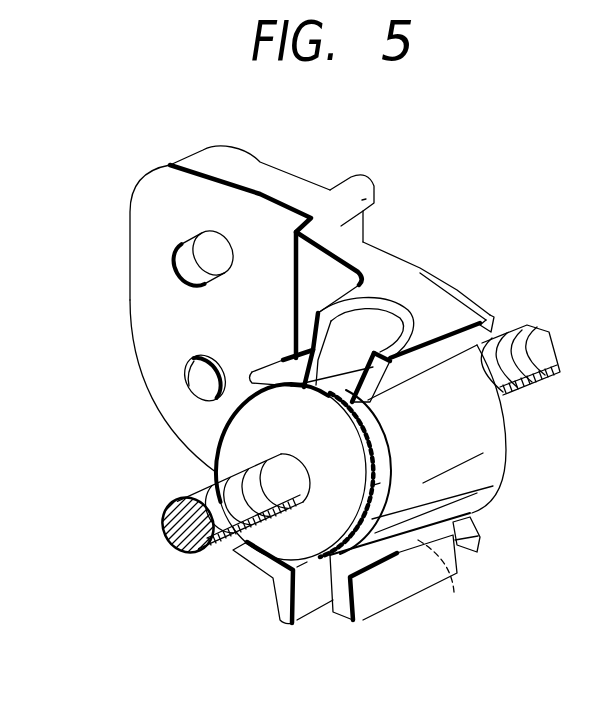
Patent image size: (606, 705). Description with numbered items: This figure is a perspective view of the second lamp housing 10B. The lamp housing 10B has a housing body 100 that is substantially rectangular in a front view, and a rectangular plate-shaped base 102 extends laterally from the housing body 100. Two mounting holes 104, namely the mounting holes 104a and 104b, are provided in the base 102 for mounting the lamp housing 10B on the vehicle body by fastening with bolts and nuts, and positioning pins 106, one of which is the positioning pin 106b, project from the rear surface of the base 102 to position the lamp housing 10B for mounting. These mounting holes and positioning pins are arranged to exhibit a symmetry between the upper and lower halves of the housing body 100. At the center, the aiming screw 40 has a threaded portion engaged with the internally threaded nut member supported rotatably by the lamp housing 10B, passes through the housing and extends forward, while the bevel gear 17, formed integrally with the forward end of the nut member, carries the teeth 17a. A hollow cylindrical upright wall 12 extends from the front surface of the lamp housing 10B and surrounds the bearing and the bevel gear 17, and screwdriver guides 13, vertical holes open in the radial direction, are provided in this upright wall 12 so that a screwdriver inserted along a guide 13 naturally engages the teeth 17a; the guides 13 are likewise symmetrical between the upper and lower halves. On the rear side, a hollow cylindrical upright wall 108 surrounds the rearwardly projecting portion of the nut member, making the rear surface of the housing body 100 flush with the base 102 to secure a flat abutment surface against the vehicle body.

The lamp housing 10B is at (268, 283).
The base 102 is at (129, 289).
The mounting hole 104 is at (134, 292).
The mounting hole 104a is at (187, 380).
The mounting hole 104b is at (170, 243).
The positioning pin 106 is at (423, 178).
The positioning pin 106b is at (379, 188).
The housing body 100 is at (466, 279).
The upright wall 108 is at (498, 312).
The upright wall 12 is at (485, 457).
The screwdriver guide 13 is at (388, 310).
The bevel gear 17 is at (359, 587).
The teeth 17a is at (452, 584).
The aiming screw 40 is at (209, 560).